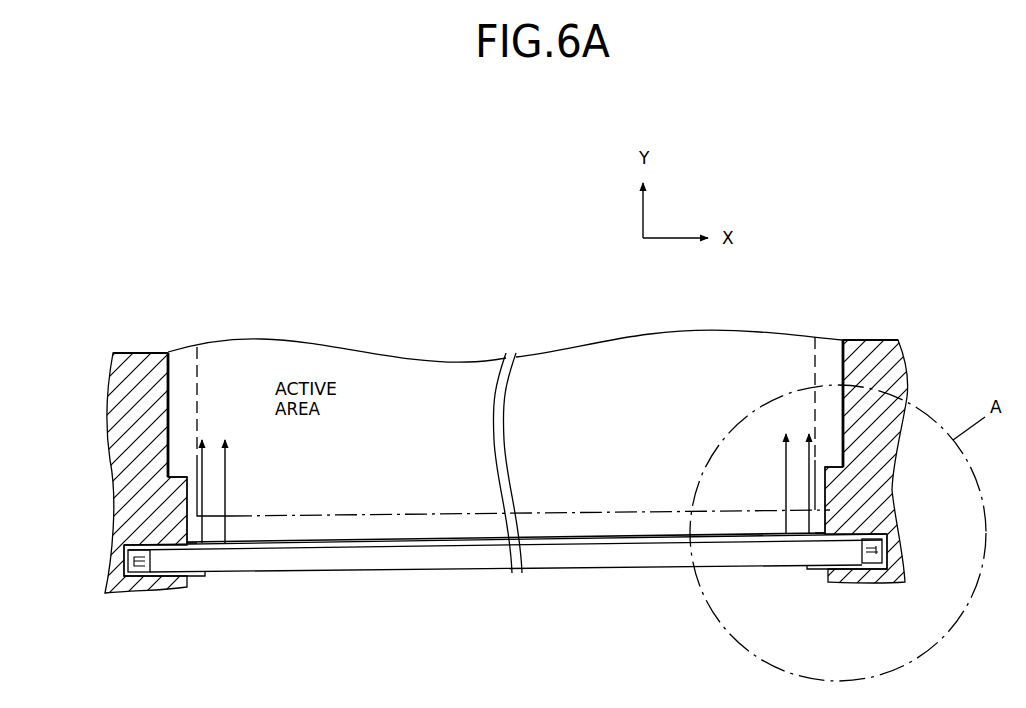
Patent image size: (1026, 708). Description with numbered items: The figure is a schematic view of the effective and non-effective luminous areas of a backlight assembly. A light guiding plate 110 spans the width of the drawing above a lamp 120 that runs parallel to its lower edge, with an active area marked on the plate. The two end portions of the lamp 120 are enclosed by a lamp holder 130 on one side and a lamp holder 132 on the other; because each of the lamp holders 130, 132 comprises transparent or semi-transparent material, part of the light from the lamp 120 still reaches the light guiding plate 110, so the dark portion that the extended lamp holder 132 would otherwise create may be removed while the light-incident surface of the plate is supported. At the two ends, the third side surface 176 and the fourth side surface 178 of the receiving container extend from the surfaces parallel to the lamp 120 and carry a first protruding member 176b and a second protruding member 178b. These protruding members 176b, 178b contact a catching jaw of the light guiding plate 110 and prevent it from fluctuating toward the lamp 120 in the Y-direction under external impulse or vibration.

The light guiding plate 110 is at (358, 362).
The lamp 120 is at (268, 567).
The lamp holder 130 is at (152, 583).
The lamp holder 132 is at (820, 570).
The third side surface 176 is at (867, 353).
The first protruding member 176b is at (836, 503).
The fourth side surface 178 is at (140, 352).
The second protruding member 178b is at (181, 516).